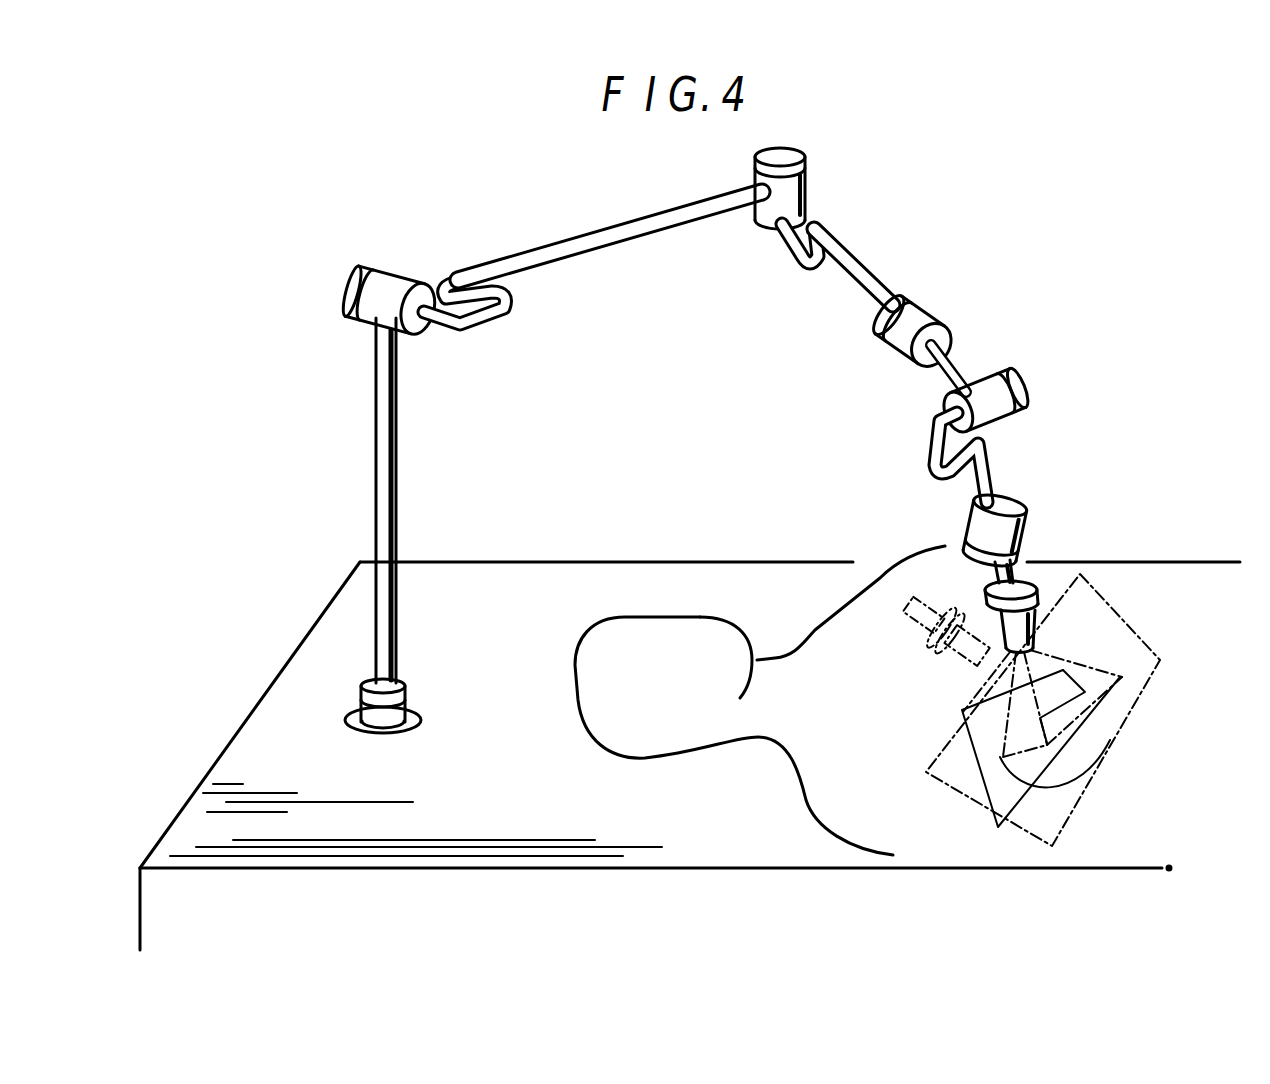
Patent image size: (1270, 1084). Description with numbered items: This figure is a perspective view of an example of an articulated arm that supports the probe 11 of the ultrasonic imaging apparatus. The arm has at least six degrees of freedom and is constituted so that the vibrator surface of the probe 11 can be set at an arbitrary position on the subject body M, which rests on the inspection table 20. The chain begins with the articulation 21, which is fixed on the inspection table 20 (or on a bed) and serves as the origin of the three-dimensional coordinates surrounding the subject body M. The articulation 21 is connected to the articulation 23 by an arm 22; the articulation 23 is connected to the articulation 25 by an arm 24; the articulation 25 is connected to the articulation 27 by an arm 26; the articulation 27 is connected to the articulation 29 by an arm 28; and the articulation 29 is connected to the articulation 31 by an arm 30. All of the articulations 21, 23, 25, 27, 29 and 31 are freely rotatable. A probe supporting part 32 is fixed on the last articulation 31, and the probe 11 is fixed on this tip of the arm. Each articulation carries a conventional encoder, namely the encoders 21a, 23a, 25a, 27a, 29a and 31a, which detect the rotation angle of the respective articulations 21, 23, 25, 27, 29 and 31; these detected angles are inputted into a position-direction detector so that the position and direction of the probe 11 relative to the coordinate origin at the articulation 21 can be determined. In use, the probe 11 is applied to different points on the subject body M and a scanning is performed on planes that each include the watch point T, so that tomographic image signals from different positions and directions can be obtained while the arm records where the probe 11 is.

The probe 11 is at (932, 592).
The inspection table 20 is at (212, 772).
The articulation 21 is at (360, 695).
The encoder 21a is at (352, 710).
The arm 22 is at (392, 498).
The articulation 23 is at (400, 290).
The encoder 23a is at (358, 284).
The arm 24 is at (596, 236).
The articulation 25 is at (802, 184).
The encoder 25a is at (806, 150).
The arm 26 is at (854, 262).
The articulation 27 is at (938, 318).
The encoder 27a is at (908, 298).
The arm 28 is at (946, 372).
The articulation 29 is at (1000, 420).
The encoder 29a is at (1014, 380).
The arm 30 is at (976, 472).
The articulation 31 is at (1022, 518).
The encoder 31a is at (1026, 552).
The probe supporting part 32 is at (985, 593).
The subject body M is at (833, 657).
The watch point T is at (1118, 722).